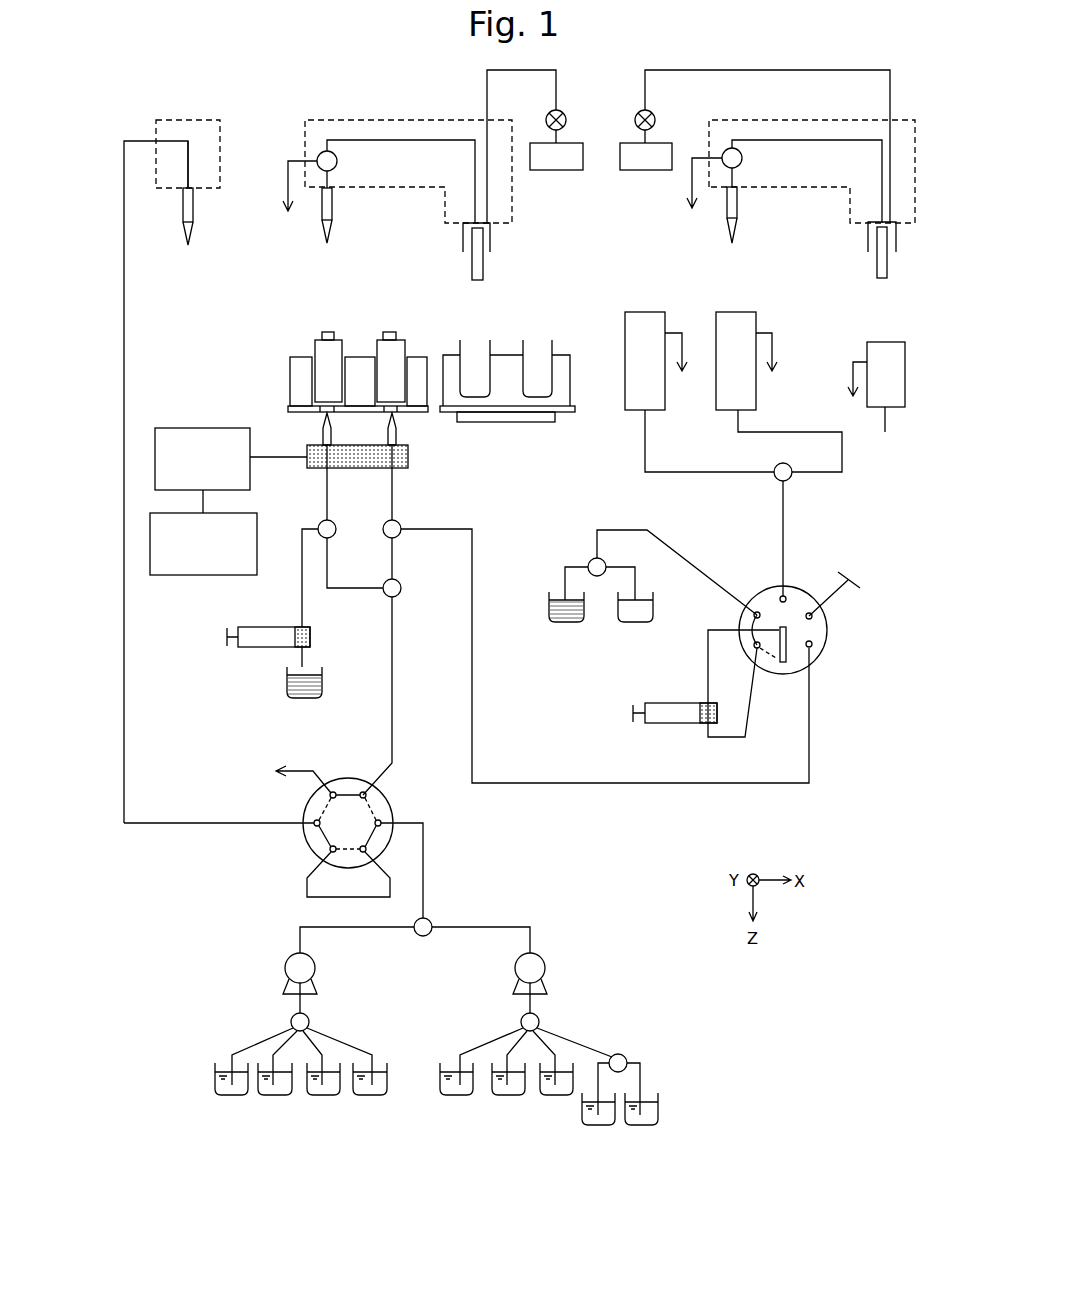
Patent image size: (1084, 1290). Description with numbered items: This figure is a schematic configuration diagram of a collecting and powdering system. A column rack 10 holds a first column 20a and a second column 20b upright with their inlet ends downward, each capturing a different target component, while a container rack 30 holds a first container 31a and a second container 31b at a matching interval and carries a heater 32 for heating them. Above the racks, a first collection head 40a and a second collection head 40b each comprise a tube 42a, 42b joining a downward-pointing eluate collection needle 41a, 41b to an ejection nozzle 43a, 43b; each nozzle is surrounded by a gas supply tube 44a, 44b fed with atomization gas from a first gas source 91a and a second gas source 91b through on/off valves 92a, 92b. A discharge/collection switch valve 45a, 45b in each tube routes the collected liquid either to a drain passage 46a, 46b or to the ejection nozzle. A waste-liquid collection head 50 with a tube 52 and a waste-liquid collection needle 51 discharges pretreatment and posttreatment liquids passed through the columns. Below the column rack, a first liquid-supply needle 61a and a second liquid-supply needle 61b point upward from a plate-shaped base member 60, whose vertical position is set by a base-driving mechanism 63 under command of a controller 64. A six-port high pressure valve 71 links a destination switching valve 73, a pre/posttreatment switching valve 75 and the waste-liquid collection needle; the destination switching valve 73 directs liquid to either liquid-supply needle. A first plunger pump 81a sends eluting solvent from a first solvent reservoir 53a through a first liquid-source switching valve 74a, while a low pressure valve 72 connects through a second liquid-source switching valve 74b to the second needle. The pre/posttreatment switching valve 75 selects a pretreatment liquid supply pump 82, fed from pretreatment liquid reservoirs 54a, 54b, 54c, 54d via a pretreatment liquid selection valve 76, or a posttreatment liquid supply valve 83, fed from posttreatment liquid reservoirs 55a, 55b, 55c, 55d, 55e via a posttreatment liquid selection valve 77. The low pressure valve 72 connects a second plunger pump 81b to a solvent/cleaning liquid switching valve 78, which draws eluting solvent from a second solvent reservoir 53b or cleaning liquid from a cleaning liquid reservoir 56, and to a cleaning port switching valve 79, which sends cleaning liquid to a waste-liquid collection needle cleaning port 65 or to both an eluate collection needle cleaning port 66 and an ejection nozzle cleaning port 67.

The column rack 10 is at (290, 383).
The first column 20a is at (318, 340).
The second column 20b is at (380, 340).
The container rack 30 is at (572, 382).
The first container 31a is at (490, 350).
The second container 31b is at (555, 350).
The heater 32 is at (530, 424).
The first collection head 40a is at (420, 120).
The second collection head 40b is at (832, 120).
The eluate collection needle 41a is at (333, 236).
The eluate collection needle 41b is at (738, 232).
The tube 42a is at (372, 122).
The tube 42b is at (782, 122).
The ejection nozzle 43a is at (485, 270).
The ejection nozzle 43b is at (876, 264).
The gas supply tube 44a is at (494, 240).
The gas supply tube 44b is at (866, 238).
The discharge/collection switch valve 45a is at (318, 158).
The discharge/collection switch valve 45b is at (727, 150).
The drain passage 46a is at (285, 193).
The drain passage 46b is at (688, 200).
The waste-liquid collection head 50 is at (202, 120).
The waste-liquid collection needle 51 is at (183, 236).
The tube 52 is at (183, 140).
The first solvent reservoir 53a is at (286, 700).
The second solvent reservoir 53b is at (553, 624).
The pretreatment liquid reservoir 54a is at (228, 1096).
The pretreatment liquid reservoir 54b is at (278, 1096).
The pretreatment liquid reservoir 54c is at (328, 1096).
The pretreatment liquid reservoir 54d is at (378, 1096).
The posttreatment liquid reservoir 55a is at (458, 1096).
The posttreatment liquid reservoir 55b is at (508, 1096).
The posttreatment liquid reservoir 55c is at (556, 1096).
The posttreatment liquid reservoir 55d is at (604, 1126).
The posttreatment liquid reservoir 55e is at (650, 1126).
The cleaning liquid reservoir 56 is at (648, 624).
The base member 60 is at (408, 468).
The first liquid-supply needle 61a is at (322, 440).
The second liquid-supply needle 61b is at (398, 440).
The base-driving mechanism 63 is at (182, 428).
The controller 64 is at (185, 575).
The waste-liquid collection needle cleaning port 65 is at (660, 312).
The eluate collection needle cleaning port 66 is at (748, 312).
The ejection nozzle cleaning port 67 is at (896, 342).
The high pressure valve 71 is at (303, 850).
The low pressure valve 72 is at (830, 632).
The destination switching valve 73 is at (400, 596).
The first liquid-source switching valve 74a is at (336, 540).
The second liquid-source switching valve 74b is at (401, 540).
The pre/posttreatment switching valve 75 is at (430, 920).
The pretreatment liquid selection valve 76 is at (310, 1023).
The posttreatment liquid selection valve 77 is at (539, 1022).
The solvent/cleaning liquid switching valve 78 is at (592, 560).
The cleaning port switching valve 79 is at (790, 480).
The first plunger pump 81a is at (240, 648).
The second plunger pump 81b is at (656, 724).
The pretreatment liquid supply pump 82 is at (316, 969).
The posttreatment liquid supply valve 83 is at (546, 969).
The first gas source 91a is at (556, 172).
The second gas source 91b is at (630, 172).
The on/off valve 92a is at (562, 114).
The on/off valve 92b is at (649, 114).